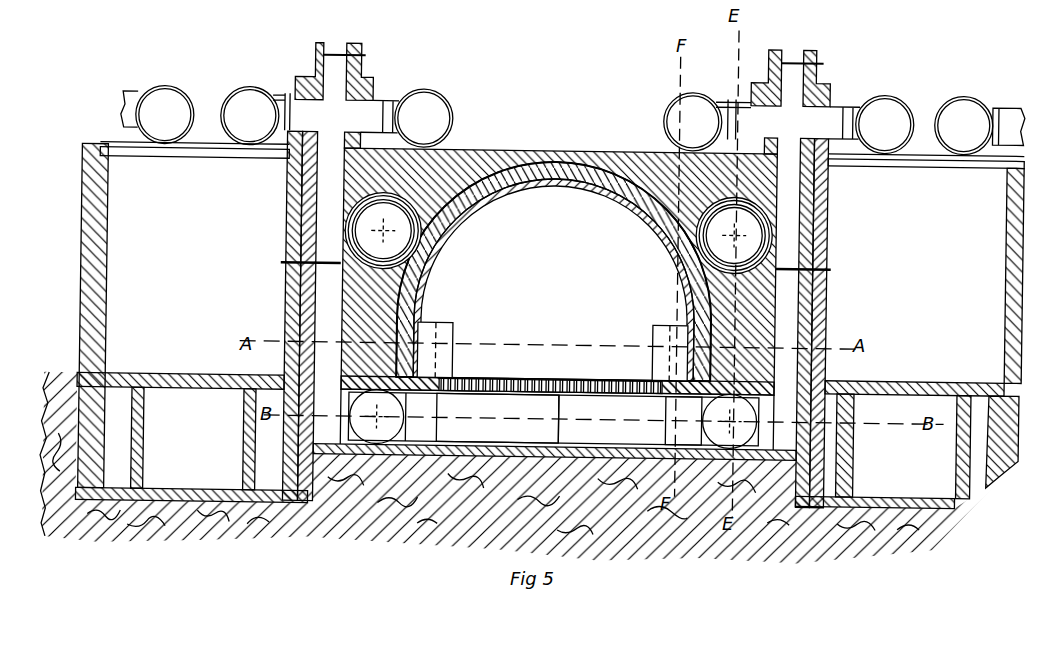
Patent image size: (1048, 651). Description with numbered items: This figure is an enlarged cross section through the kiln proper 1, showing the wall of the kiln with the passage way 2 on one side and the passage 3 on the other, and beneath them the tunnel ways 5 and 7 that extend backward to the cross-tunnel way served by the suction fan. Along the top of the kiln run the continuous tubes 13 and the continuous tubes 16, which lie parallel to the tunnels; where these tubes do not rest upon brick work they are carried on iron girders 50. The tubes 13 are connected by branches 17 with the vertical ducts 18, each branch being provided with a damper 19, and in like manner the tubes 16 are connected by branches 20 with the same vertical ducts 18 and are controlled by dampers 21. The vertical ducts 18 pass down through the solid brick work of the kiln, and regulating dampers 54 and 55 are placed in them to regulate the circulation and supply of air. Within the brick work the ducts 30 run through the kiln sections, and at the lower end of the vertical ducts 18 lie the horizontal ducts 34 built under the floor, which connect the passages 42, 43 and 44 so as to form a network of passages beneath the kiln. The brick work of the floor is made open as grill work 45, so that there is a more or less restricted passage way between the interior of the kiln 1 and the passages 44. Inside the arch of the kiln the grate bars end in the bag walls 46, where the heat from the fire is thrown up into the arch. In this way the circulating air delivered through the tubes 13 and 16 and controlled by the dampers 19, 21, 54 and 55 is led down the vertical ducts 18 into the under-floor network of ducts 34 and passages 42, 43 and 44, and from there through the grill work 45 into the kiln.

The kiln proper 1 is at (527, 426).
The passage way 2 is at (118, 258).
The passage 3 is at (947, 173).
The tunnel way 5 is at (200, 397).
The tunnel way 7 is at (933, 403).
The continuous tubes 13 is at (172, 92).
The continuous tubes 16 is at (241, 92).
The branches 17 is at (134, 97).
The vertical ducts 18 is at (332, 46).
The damper 19 is at (382, 102).
The branches 20 is at (277, 93).
The dampers 21 is at (286, 95).
The ducts 30 is at (352, 222).
The horizontal ducts 34 is at (402, 424).
The passages 42 is at (673, 443).
The passages 43 is at (553, 447).
The passages 44 is at (623, 440).
The grill work 45 is at (580, 379).
The bag walls 46 is at (453, 325).
The iron girders 50 is at (190, 152).
The regulating damper 54 is at (290, 262).
The regulating damper 55 is at (356, 56).